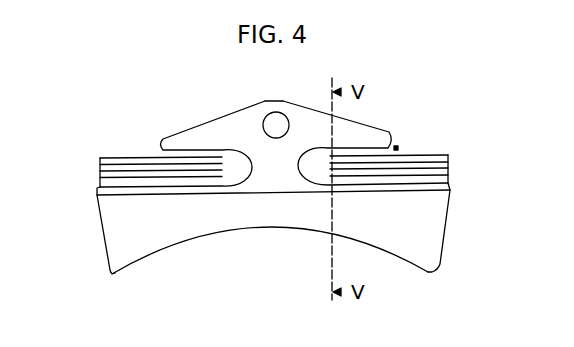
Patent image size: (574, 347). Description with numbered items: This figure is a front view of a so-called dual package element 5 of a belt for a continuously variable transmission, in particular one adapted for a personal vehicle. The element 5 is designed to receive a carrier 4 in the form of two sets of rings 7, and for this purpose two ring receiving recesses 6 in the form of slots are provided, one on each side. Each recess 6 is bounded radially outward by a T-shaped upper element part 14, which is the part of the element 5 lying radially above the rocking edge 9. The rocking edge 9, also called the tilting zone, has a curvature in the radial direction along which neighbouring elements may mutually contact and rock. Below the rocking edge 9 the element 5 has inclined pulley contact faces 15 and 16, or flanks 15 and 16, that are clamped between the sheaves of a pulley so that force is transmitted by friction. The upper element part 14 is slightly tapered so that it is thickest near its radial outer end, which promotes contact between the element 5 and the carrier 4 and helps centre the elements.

The carrier 4 is at (136, 131).
The T-shaped upper element part 14 is at (246, 126).
The sets of rings 7 is at (97, 163).
The ring receiving recess 6 is at (399, 147).
The rocking edge 9 is at (413, 196).
The pulley contact face 16 is at (98, 220).
The pulley contact face 15 is at (442, 248).
The element 5 is at (246, 288).